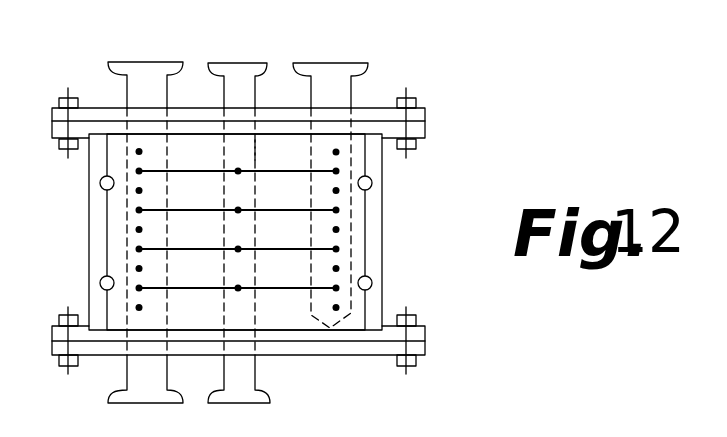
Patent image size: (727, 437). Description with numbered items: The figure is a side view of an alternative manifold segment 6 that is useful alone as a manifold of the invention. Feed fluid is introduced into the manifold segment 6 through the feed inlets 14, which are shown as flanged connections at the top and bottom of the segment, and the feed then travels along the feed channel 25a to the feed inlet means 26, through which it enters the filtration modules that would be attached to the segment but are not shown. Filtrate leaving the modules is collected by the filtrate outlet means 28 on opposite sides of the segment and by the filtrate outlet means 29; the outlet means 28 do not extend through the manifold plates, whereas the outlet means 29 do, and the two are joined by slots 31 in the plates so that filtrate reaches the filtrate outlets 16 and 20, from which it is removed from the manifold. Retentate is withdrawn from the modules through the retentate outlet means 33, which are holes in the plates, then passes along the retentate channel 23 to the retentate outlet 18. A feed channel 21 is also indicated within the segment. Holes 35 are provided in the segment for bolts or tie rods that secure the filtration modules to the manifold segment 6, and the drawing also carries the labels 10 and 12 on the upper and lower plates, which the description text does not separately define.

The manifold segment 6 is at (383, 238).
The top plate 10 is at (180, 107).
The bottom plate 12 is at (353, 356).
The feed inlet 14 is at (136, 90).
The filtrate outlet 16 is at (238, 396).
The retentate outlet 18 is at (331, 75).
The filtrate outlet 20 is at (239, 76).
The feed channel 21 is at (240, 150).
The retentate channel 23 is at (325, 233).
The feed channel 25a is at (150, 230).
The feed inlet means 26 is at (139, 191).
The filtrate outlet means 28 is at (139, 171).
The filtrate outlet means 29 is at (238, 172).
The slots 31 is at (155, 172).
The retentate outlet means 33 is at (339, 151).
The holes 35 is at (372, 283).